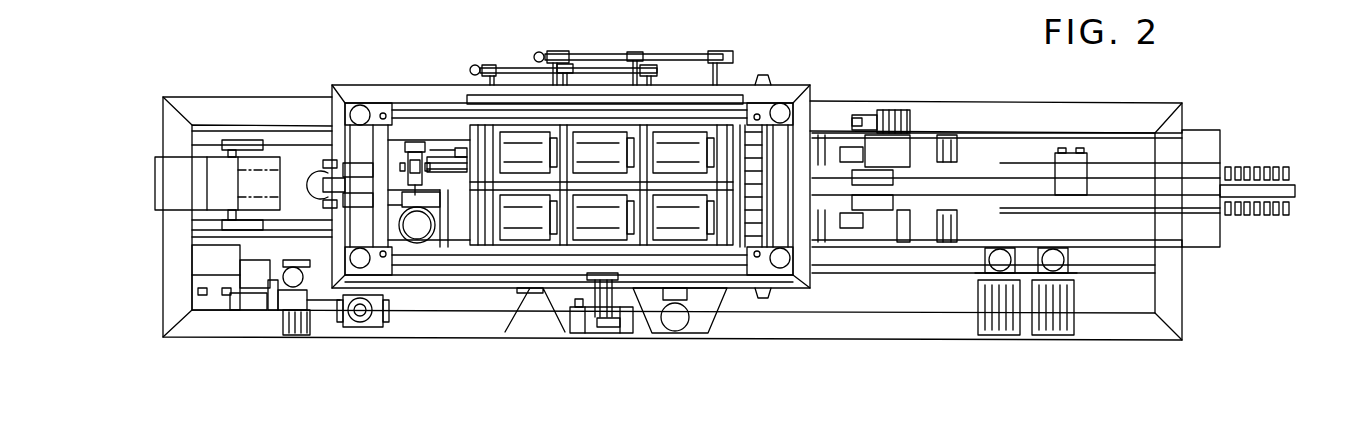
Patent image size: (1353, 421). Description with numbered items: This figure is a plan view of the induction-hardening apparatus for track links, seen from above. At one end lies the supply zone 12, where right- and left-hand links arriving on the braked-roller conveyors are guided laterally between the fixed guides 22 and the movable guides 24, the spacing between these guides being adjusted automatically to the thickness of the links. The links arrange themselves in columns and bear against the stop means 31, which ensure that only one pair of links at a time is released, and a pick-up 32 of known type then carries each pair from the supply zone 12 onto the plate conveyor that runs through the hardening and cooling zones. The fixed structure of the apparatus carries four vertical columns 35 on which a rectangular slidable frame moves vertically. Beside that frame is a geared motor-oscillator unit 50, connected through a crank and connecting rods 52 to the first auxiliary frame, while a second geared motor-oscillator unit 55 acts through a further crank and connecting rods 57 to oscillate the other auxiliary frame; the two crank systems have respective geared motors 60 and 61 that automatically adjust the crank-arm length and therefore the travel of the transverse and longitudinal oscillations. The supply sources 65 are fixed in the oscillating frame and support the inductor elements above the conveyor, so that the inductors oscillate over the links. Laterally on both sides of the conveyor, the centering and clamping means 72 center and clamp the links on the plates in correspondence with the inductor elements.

The supply zone 12 is at (1005, 145).
The fixed guides 22 is at (918, 182).
The movable guides 24 is at (1120, 210).
The stop means 31 is at (955, 160).
The pick-up 32 is at (877, 180).
The vertical columns 35 is at (785, 108).
The geared motor-oscillator unit 50 is at (680, 320).
The connecting rods 52 is at (616, 292).
The geared motor-oscillator unit 55 is at (433, 203).
The connecting rods 57 is at (449, 172).
The geared motor 60 is at (610, 330).
The geared motor 61 is at (415, 163).
The supply sources 65 is at (590, 153).
The centering and clamping means 72 is at (603, 47).